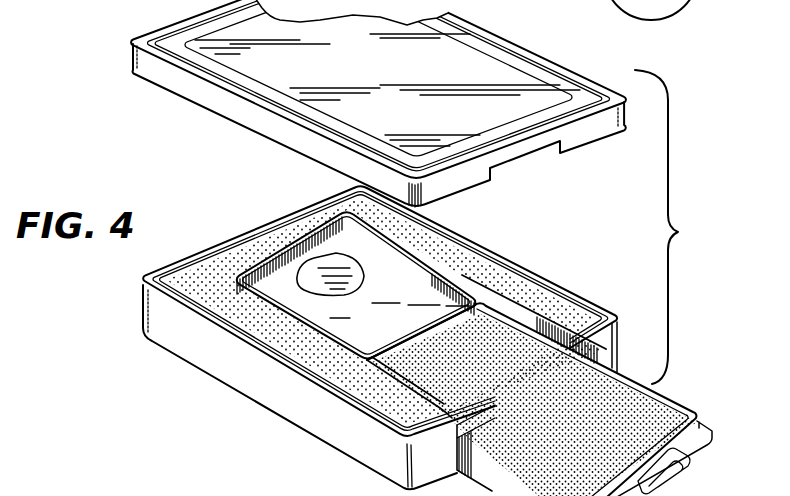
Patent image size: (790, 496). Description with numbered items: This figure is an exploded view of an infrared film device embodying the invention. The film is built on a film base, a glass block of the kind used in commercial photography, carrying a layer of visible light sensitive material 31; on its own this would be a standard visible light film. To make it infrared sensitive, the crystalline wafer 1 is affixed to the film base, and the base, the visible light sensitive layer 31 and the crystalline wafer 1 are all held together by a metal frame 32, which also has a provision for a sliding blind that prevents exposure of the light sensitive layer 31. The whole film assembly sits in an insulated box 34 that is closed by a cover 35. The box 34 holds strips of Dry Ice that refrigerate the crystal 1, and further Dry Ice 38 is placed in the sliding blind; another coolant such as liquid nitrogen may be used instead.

The crystalline wafer 1 is at (470, 268).
The layer of visible light sensitive material 31 is at (323, 272).
The metal frame 32 is at (277, 313).
The insulated box 34 is at (143, 320).
The cover 35 is at (136, 70).
The Dry Ice 38 is at (600, 400).